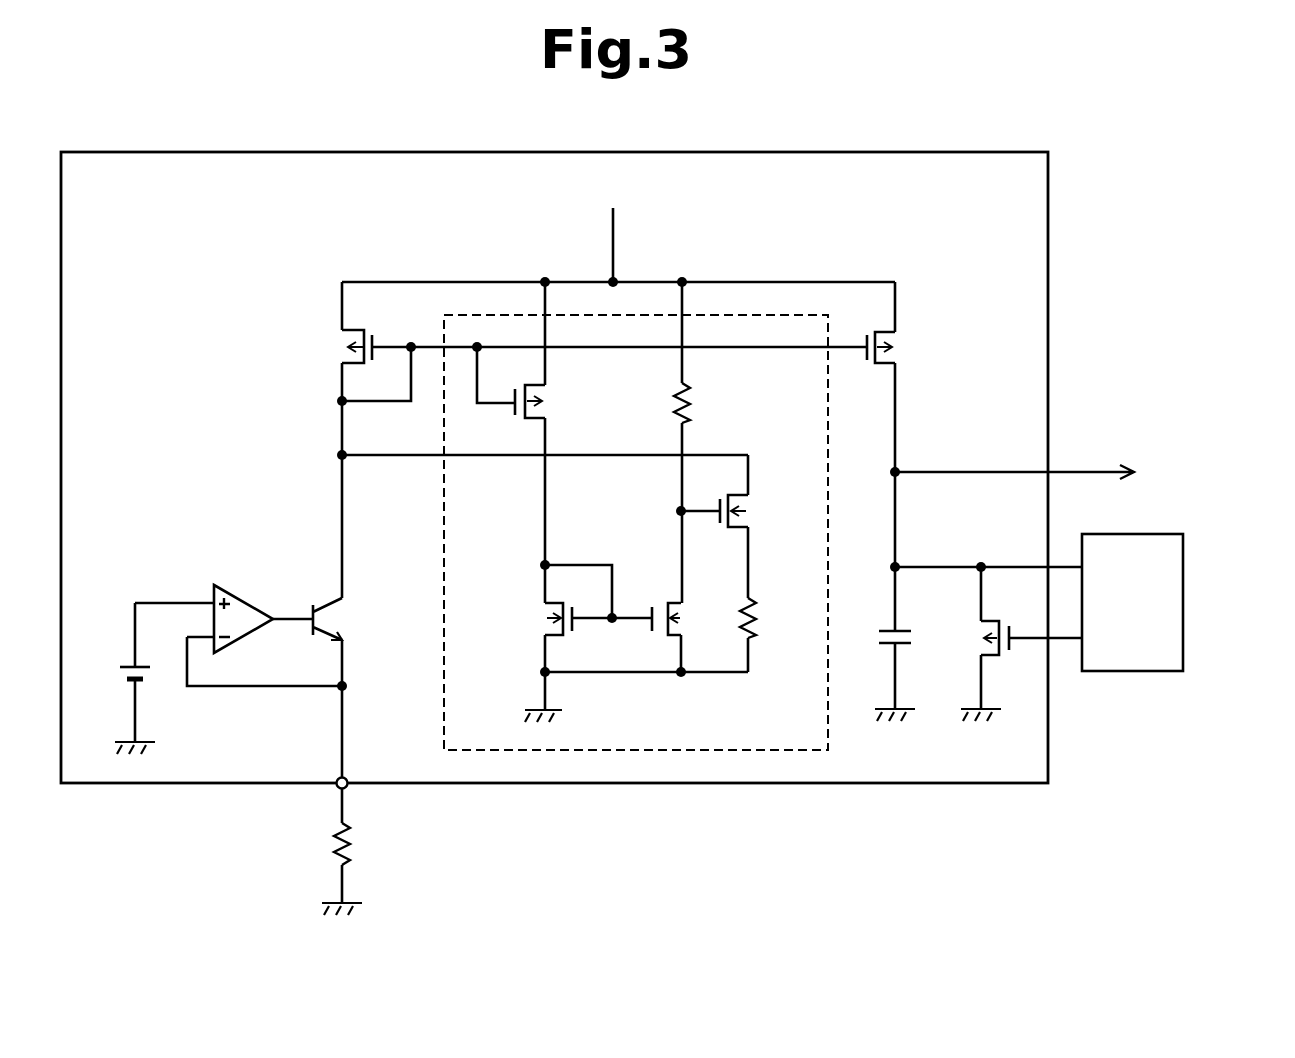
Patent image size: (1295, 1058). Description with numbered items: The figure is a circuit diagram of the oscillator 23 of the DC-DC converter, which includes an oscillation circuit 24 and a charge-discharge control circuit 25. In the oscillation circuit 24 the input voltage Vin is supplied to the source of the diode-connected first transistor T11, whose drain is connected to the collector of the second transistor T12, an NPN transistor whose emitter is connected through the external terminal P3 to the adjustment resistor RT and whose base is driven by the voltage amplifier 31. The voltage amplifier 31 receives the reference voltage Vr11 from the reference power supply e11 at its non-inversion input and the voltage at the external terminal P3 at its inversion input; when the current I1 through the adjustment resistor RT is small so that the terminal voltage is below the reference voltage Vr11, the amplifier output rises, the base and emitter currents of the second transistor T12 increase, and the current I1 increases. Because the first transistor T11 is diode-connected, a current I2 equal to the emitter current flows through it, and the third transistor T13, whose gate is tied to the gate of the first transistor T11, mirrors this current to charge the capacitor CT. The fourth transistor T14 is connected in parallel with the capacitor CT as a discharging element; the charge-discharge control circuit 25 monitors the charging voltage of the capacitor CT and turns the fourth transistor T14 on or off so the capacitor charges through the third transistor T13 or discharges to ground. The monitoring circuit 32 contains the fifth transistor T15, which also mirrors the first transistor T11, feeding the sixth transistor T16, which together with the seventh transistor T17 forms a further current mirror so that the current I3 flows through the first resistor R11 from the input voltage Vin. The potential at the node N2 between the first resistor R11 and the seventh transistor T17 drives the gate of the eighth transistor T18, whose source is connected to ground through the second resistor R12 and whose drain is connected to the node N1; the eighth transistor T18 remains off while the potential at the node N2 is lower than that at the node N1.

The oscillator 23 is at (1216, 337).
The oscillation circuit 24 is at (1048, 350).
The charge-discharge control circuit 25 is at (1160, 534).
The voltage amplifier 31 is at (249, 594).
The monitoring circuit 32 is at (800, 315).
The first transistor T11 is at (345, 336).
The second transistor T12 is at (340, 614).
The third transistor T13 is at (897, 334).
The fourth transistor T14 is at (987, 650).
The fifth transistor T15 is at (547, 392).
The sixth transistor T16 is at (547, 612).
The seventh transistor T17 is at (643, 608).
The eighth transistor T18 is at (755, 512).
The first resistor R11 is at (698, 388).
The second resistor R12 is at (762, 638).
The adjustment resistor RT is at (352, 834).
The capacitor CT is at (879, 630).
The node N1 is at (342, 456).
The node N2 is at (681, 511).
The external terminal P3 is at (336, 789).
The current I1 is at (358, 745).
The current I2 is at (327, 372).
The current I3 is at (699, 418).
The input voltage Vin is at (608, 228).
The reference voltage Vr11 is at (150, 587).
The reference power supply e11 is at (122, 666).